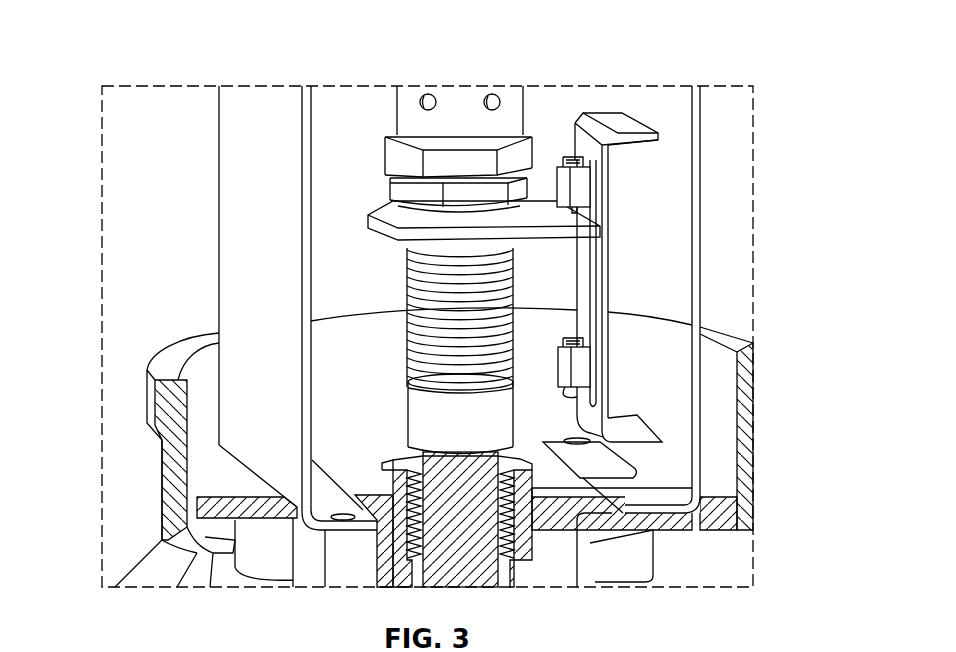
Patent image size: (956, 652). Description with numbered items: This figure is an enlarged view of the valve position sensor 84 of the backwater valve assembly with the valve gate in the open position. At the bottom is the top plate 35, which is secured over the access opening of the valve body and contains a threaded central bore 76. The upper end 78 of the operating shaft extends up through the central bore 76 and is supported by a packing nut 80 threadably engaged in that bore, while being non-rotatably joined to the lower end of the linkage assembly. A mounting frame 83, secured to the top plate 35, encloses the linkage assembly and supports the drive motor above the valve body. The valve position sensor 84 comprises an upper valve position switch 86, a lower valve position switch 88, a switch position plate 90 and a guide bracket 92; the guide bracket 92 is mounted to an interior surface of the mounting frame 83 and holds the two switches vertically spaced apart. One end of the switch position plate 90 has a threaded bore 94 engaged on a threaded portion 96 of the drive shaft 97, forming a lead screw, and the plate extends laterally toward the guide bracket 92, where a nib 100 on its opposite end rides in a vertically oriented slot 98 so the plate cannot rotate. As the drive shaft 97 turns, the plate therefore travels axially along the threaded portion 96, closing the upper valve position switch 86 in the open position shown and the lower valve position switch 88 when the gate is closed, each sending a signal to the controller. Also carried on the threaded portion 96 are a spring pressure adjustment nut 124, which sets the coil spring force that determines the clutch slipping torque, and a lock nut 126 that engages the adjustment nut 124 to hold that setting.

The top plate 35 is at (218, 488).
The threaded central bore 76 is at (655, 535).
The upper end of the operating shaft 78 is at (665, 503).
The mounting frame 83 is at (250, 127).
The valve position sensor 84 is at (733, 62).
The upper valve position switch 86 is at (552, 167).
The lower valve position switch 88 is at (593, 392).
The switch position plate 90 is at (543, 217).
The guide bracket 92 is at (625, 118).
The threaded bore 94 is at (418, 197).
The threaded portion 96 is at (407, 290).
The drive shaft 97 is at (397, 408).
The vertically oriented slot 98 is at (607, 313).
The nib 100 is at (577, 213).
The packing nut 80 is at (615, 418).
The spring pressure adjustment nut 124 is at (395, 128).
The lock nut 126 is at (403, 180).